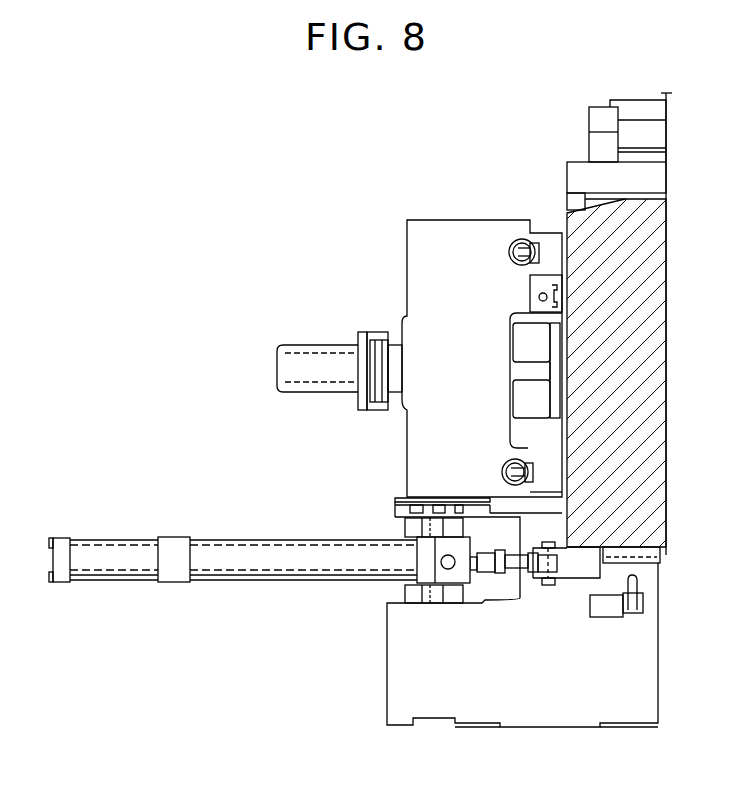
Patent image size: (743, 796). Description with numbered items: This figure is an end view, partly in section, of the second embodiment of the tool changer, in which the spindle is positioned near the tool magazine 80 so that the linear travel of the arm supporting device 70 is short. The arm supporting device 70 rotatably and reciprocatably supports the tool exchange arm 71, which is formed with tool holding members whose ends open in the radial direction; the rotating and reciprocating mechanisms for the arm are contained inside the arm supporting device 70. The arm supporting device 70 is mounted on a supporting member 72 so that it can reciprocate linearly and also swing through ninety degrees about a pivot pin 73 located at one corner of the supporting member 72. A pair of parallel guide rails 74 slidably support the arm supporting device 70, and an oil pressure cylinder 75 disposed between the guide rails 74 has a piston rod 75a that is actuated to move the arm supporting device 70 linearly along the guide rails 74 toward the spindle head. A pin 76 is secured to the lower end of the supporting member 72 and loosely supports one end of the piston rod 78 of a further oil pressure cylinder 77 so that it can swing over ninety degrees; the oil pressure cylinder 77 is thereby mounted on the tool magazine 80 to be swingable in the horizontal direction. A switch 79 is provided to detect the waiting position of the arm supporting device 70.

The arm supporting device 70 is at (408, 296).
The tool exchange arm 71 is at (357, 402).
The supporting member 72 is at (648, 340).
The pivot pin 73 is at (652, 125).
The guide rails 74 is at (514, 244).
The oil pressure cylinder 75 is at (547, 311).
The piston rod 75a is at (545, 292).
The pin 76 is at (563, 562).
The oil pressure cylinder 77 is at (275, 576).
The piston rod 78 is at (517, 565).
The switch 79 is at (632, 592).
The tool magazine 80 is at (543, 710).